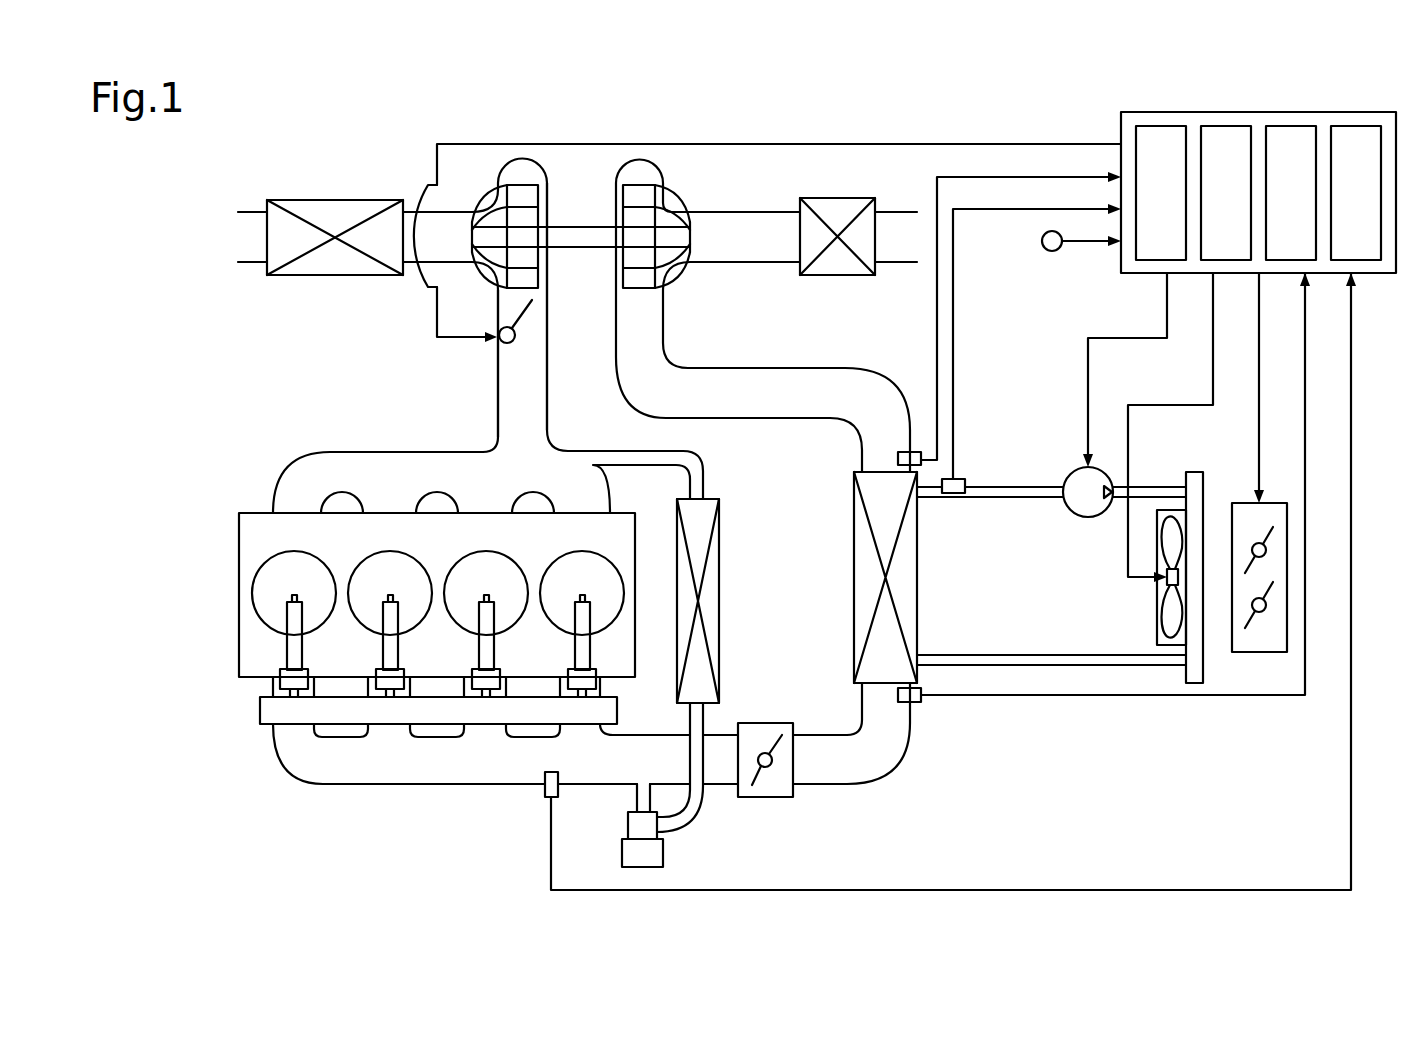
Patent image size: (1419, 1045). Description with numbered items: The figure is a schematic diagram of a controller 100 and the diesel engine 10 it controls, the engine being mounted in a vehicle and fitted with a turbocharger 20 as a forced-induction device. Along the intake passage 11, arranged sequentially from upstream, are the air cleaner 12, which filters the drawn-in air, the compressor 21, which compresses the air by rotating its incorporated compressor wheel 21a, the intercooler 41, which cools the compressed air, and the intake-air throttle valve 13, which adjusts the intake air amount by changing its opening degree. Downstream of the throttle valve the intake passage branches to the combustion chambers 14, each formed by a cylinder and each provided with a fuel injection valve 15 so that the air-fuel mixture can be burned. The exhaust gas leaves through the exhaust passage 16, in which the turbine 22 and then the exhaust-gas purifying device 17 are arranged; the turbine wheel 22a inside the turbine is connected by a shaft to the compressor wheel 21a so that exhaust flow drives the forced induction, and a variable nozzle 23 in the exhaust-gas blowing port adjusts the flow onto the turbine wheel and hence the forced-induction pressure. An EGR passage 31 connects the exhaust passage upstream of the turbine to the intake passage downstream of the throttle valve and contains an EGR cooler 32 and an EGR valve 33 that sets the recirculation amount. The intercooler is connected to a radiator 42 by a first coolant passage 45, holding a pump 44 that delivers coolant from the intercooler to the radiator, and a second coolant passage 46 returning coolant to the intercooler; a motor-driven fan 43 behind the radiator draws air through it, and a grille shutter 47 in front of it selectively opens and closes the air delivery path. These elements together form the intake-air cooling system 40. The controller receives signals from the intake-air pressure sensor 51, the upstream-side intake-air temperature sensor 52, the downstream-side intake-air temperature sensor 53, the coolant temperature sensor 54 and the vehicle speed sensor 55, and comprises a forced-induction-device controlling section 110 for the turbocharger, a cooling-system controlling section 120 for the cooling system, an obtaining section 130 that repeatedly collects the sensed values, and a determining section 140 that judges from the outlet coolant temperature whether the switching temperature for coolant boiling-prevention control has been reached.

The diesel engine 10 is at (314, 150).
The intake passage 11 is at (762, 420).
The air cleaner 12 is at (838, 275).
The intake-air throttle valve 13 is at (760, 778).
The combustion chamber 14 is at (294, 549).
The fuel injection valve 15 is at (282, 649).
The exhaust passage 16 is at (497, 364).
The exhaust-gas purifying device 17 is at (338, 275).
The turbocharger 20 is at (594, 125).
The compressor 21 is at (655, 162).
The compressor wheel 21a is at (667, 262).
The turbine 22 is at (542, 162).
The turbine wheel 22a is at (496, 203).
The variable nozzle 23 is at (522, 323).
The EGR passage 31 is at (705, 717).
The EGR cooler 32 is at (720, 600).
The EGR valve 33 is at (643, 867).
The intake-air cooling system 40 is at (1104, 727).
The intercooler 41 is at (854, 573).
The radiator 42 is at (1204, 493).
The motor-driven fan 43 is at (1157, 608).
The pump 44 is at (1088, 518).
The first coolant passage 45 is at (988, 498).
The second coolant passage 46 is at (988, 655).
The grille shutter 47 is at (1262, 652).
The intake-air pressure sensor 51 is at (544, 791).
The upstream-side intake-air temperature sensor 52 is at (907, 452).
The downstream-side intake-air temperature sensor 53 is at (910, 702).
The coolant temperature sensor 54 is at (954, 478).
The vehicle speed sensor 55 is at (1052, 252).
The controller 100 is at (1124, 110).
The forced-induction-device controlling section 110 is at (1160, 126).
The cooling-system controlling section 120 is at (1225, 126).
The obtaining section 130 is at (1290, 126).
The determining section 140 is at (1355, 126).